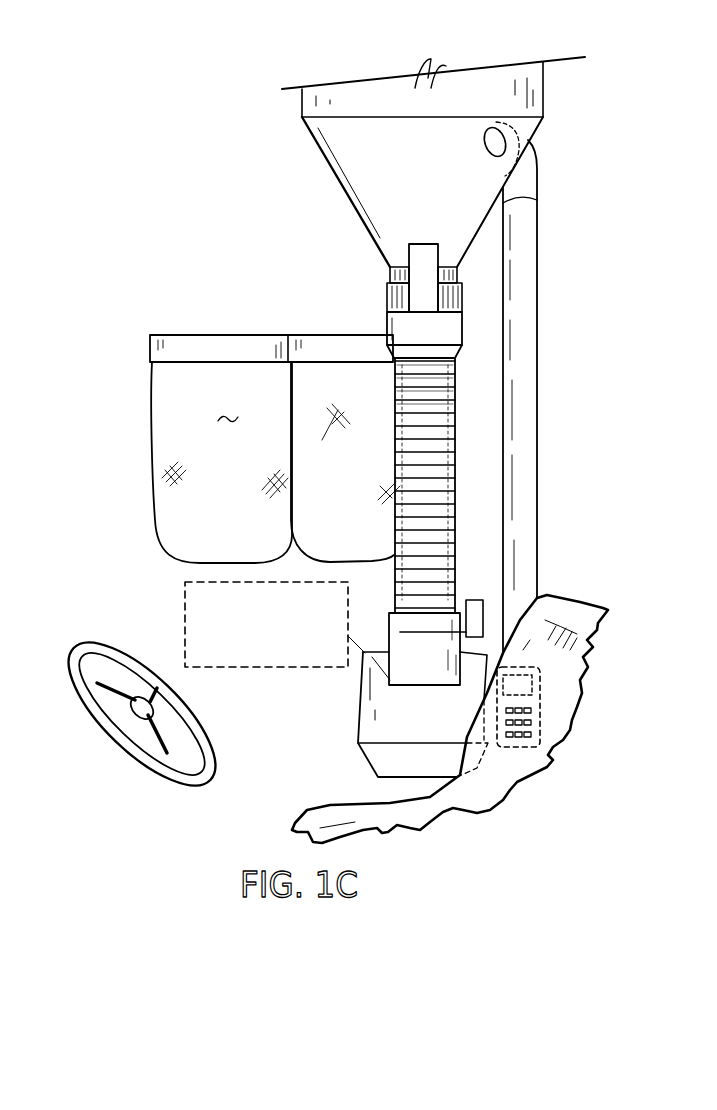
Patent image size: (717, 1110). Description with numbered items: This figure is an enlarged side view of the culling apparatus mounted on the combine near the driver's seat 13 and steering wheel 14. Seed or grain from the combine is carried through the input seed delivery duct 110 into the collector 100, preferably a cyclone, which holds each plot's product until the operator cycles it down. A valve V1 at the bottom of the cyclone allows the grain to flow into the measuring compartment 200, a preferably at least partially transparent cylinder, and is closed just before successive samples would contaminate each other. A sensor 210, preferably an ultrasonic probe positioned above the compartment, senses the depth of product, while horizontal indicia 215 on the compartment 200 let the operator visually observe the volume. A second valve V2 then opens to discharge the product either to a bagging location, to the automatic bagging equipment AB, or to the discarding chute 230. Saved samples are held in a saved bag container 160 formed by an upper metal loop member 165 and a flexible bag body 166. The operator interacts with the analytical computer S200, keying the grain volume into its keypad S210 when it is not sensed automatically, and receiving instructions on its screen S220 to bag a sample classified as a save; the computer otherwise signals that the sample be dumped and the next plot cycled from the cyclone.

The collector 100 is at (345, 97).
The input seed delivery duct 110 is at (523, 262).
The sensor 210 is at (422, 260).
The valve V1 is at (470, 348).
The measuring compartment 200 is at (443, 428).
The horizontal indicia 215 is at (440, 526).
The valve V2 is at (483, 592).
The discarding chute 230 is at (472, 668).
The driver's seat 13 is at (593, 613).
The saved bag container 160 is at (172, 325).
The upper metal loop member 165 is at (243, 348).
The flexible bag body 166 is at (229, 405).
The automatic bagging equipment AB is at (190, 608).
The steering wheel 14 is at (170, 688).
The analytical computer S200 is at (538, 712).
The screen S220 is at (530, 687).
The keypad S210 is at (538, 734).